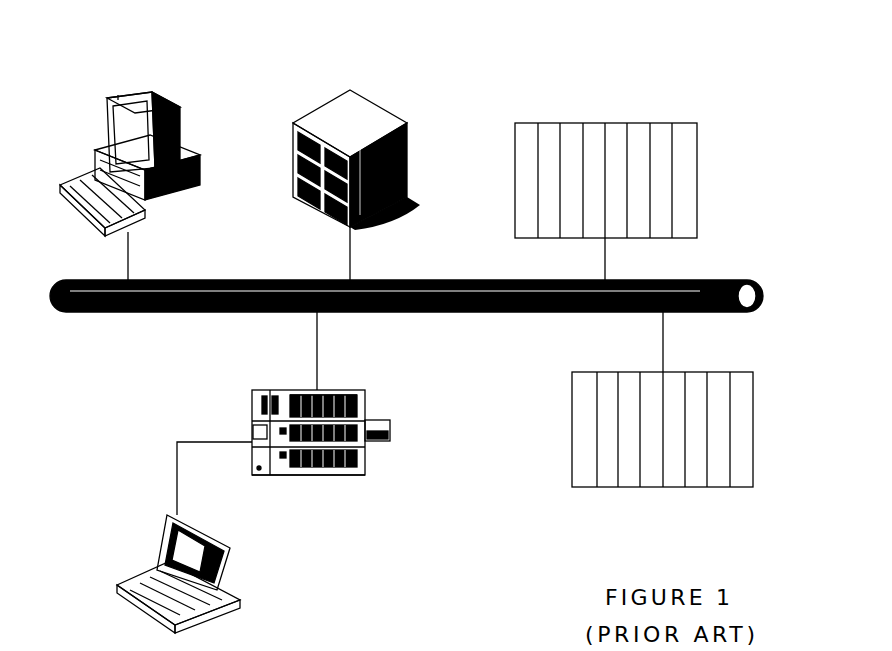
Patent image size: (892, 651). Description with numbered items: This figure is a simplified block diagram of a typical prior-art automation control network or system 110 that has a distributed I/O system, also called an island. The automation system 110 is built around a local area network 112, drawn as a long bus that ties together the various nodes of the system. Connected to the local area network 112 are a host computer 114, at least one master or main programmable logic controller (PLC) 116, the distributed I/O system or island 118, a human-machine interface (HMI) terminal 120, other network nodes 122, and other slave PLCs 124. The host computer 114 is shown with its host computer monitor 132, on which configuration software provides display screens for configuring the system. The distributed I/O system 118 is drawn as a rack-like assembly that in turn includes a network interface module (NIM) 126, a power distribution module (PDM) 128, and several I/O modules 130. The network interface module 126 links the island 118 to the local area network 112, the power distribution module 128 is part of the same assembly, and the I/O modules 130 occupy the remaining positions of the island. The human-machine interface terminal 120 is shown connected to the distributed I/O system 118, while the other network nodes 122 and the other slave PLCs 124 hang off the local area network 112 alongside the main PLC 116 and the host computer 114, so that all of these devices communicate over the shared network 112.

The automation control network or system 110 is at (790, 152).
The local area network 112 is at (410, 282).
The host computer 114 is at (65, 130).
The master or main programmable logic controller (PLC) 116 is at (407, 157).
The distributed I/O system or island 118 is at (368, 378).
The human-machine interface (HMI) terminal 120 is at (152, 543).
The other network nodes 122 is at (572, 428).
The other slave PLCs 124 is at (697, 180).
The network interface module (NIM) 126 is at (253, 424).
The power distribution module (PDM) 128 is at (280, 477).
The I/O modules 130 is at (310, 390).
The host computer monitor 132 is at (180, 113).